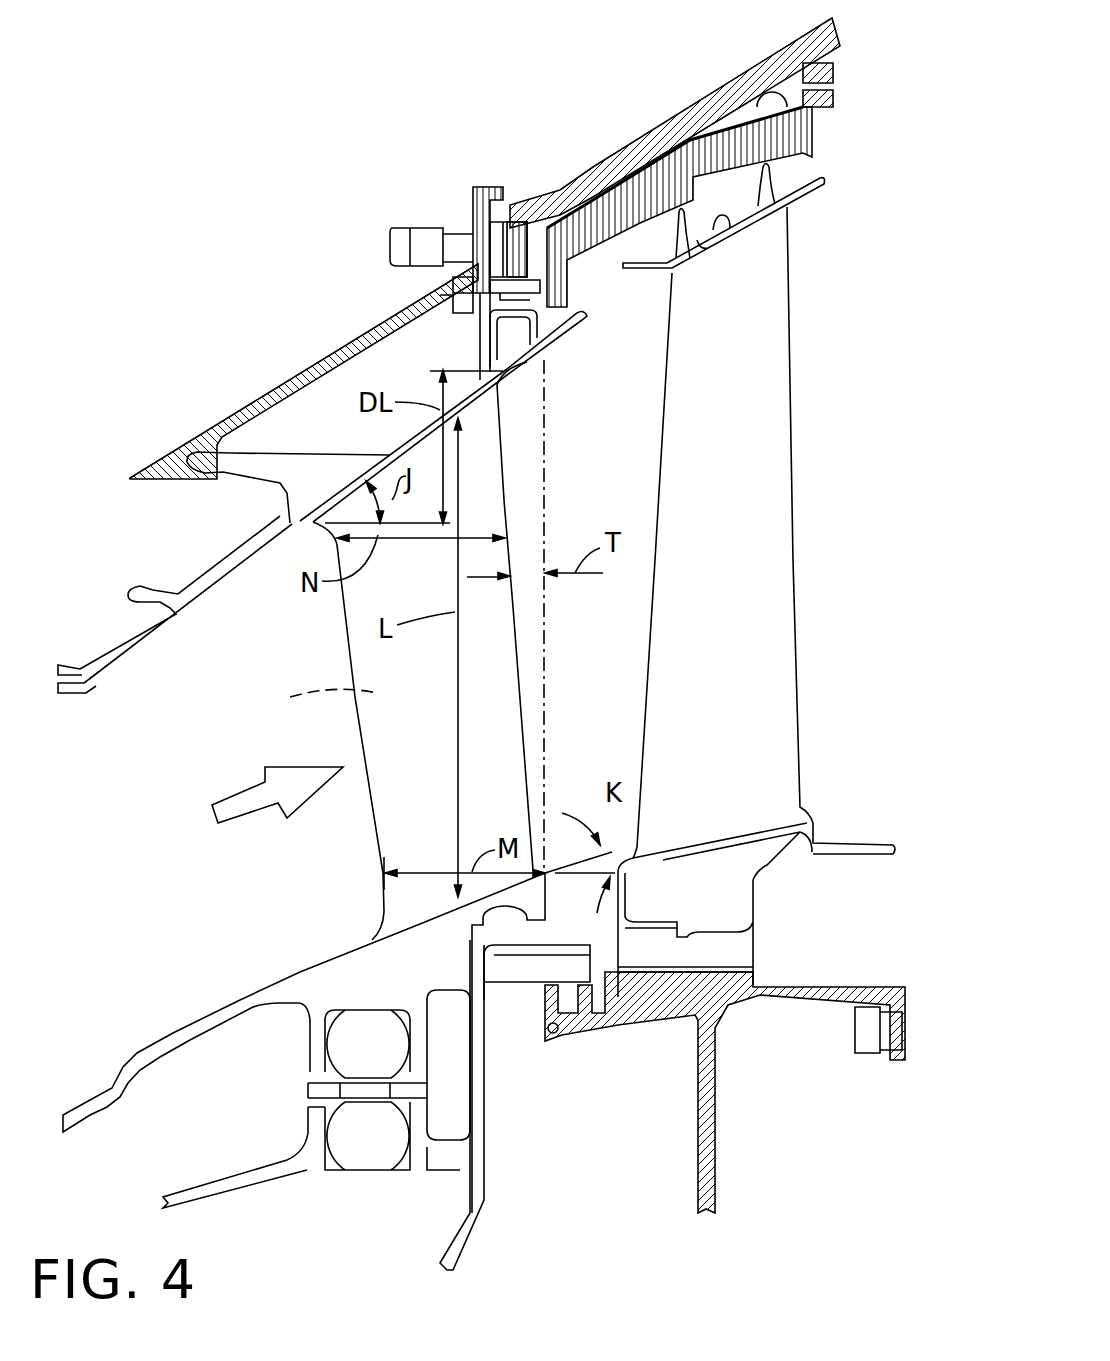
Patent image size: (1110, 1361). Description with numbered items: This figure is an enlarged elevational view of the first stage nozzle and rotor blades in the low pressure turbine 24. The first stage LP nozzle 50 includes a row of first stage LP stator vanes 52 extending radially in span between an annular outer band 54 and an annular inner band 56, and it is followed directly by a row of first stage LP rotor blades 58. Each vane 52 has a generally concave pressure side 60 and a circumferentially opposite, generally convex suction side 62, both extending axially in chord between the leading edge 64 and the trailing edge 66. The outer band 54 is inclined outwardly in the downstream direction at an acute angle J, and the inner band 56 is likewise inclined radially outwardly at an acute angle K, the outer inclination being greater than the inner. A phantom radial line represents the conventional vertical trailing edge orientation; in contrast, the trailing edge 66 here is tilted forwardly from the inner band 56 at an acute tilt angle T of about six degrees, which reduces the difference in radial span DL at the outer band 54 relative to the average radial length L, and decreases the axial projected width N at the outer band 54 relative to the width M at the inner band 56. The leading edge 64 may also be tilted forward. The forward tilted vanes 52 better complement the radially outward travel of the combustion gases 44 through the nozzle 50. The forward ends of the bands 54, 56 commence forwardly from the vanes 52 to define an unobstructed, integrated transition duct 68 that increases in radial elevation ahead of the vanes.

The low pressure turbine 24 is at (583, 153).
The combustion gases 44 is at (242, 790).
The first stage low pressure turbine nozzle 50 is at (286, 345).
The first stage LP stator vane 52 is at (341, 651).
The outer band 54 is at (240, 575).
The inner band 56 is at (317, 962).
The first stage LP rotor blade 58 is at (712, 595).
The pressure side 60 is at (439, 786).
The suction side 62 is at (314, 701).
The leading edge 64 is at (376, 822).
The trailing edge 66 is at (520, 662).
The transition duct 68 is at (173, 907).